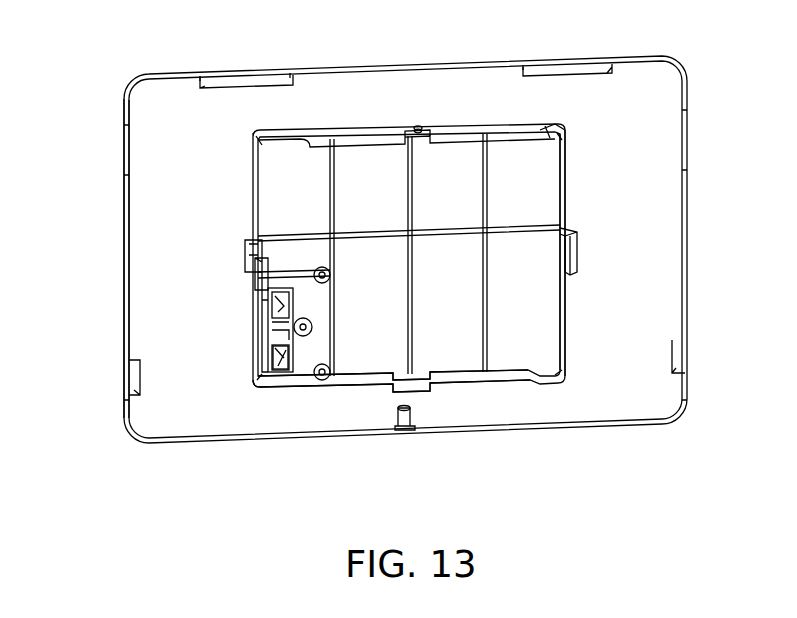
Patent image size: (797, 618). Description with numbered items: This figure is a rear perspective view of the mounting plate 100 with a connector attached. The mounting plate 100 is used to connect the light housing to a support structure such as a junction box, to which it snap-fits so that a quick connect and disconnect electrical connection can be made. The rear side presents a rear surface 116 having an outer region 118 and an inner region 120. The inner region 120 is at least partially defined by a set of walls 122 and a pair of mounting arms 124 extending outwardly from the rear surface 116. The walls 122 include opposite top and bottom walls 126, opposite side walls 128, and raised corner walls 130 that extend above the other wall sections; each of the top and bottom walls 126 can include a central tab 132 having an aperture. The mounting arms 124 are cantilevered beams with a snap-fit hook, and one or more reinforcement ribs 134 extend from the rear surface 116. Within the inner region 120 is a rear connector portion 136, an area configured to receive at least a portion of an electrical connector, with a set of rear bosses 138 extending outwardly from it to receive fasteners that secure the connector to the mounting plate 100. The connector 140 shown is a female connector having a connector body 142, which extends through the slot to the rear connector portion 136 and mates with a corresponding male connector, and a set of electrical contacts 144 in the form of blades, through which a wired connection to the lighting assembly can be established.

The mounting plate 100 is at (124, 72).
The rear surface 116 is at (140, 140).
The outer region 118 is at (657, 83).
The inner region 120 is at (397, 266).
The walls 122 is at (505, 380).
The mounting arms 124 is at (577, 258).
The top and bottom walls 126 is at (478, 133).
The side walls 128 is at (562, 308).
The raised corner walls 130 is at (562, 133).
The central tab 132 is at (418, 126).
The reinforcement ribs 134 is at (524, 280).
The rear connector portion 136 is at (323, 380).
The rear bosses 138 is at (303, 337).
The connector 140 is at (273, 380).
The connector body 142 is at (258, 322).
The electrical contacts 144 is at (268, 350).